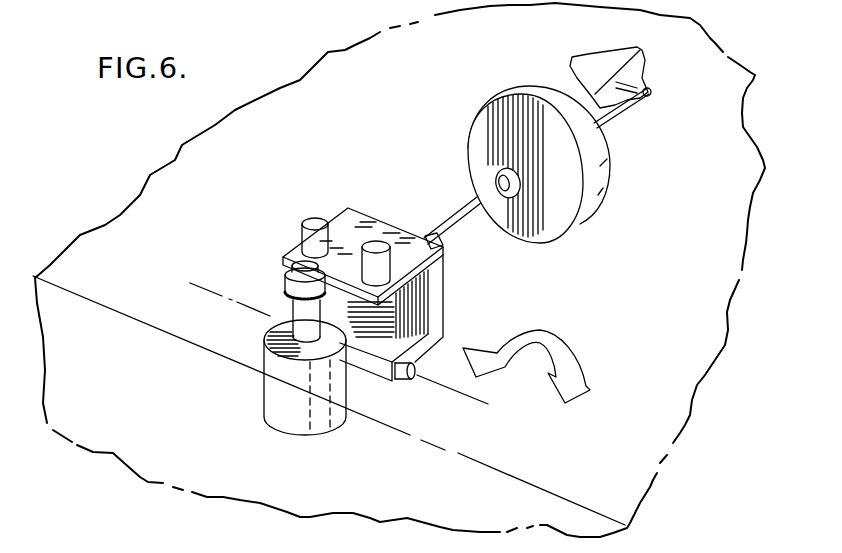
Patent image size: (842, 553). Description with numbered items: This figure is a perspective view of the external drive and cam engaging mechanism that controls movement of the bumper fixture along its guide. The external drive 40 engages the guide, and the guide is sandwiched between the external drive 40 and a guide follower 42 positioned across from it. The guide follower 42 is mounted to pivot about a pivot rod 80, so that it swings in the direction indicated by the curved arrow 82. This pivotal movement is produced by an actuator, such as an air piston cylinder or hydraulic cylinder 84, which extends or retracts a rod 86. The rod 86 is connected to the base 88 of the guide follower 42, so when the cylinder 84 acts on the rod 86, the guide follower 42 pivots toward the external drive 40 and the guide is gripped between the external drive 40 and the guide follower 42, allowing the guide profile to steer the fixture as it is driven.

The external drive 40 is at (256, 338).
The guide follower 42 is at (348, 232).
The pivot rod 80 is at (414, 376).
The arrow 82 is at (570, 348).
The hydraulic cylinder 84 is at (612, 187).
The rod 86 is at (467, 216).
The base 88 is at (443, 300).